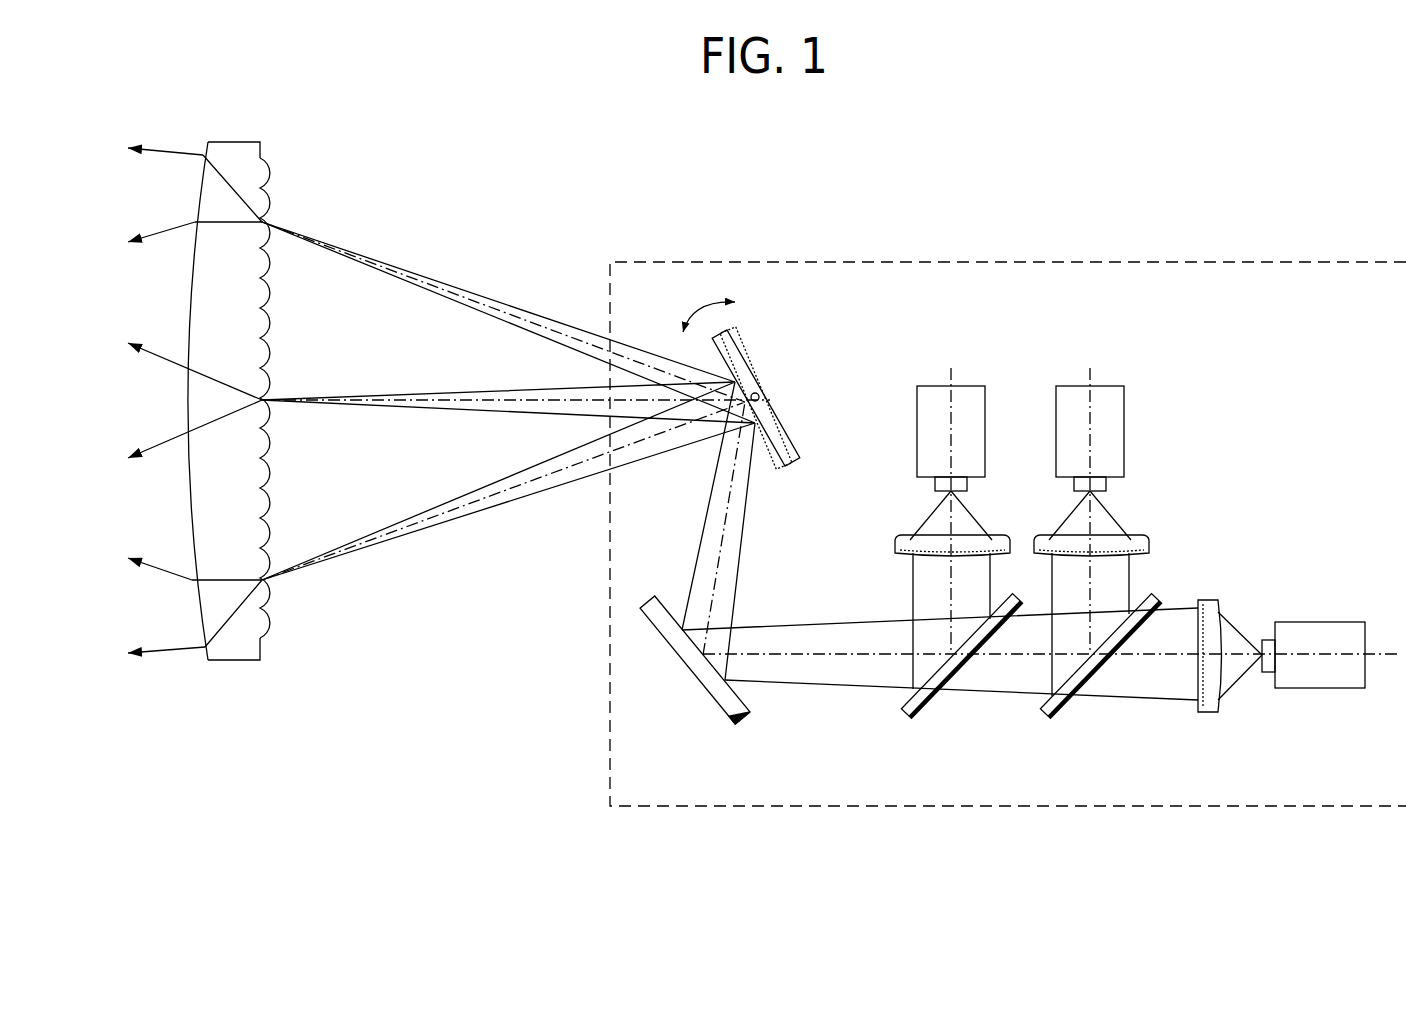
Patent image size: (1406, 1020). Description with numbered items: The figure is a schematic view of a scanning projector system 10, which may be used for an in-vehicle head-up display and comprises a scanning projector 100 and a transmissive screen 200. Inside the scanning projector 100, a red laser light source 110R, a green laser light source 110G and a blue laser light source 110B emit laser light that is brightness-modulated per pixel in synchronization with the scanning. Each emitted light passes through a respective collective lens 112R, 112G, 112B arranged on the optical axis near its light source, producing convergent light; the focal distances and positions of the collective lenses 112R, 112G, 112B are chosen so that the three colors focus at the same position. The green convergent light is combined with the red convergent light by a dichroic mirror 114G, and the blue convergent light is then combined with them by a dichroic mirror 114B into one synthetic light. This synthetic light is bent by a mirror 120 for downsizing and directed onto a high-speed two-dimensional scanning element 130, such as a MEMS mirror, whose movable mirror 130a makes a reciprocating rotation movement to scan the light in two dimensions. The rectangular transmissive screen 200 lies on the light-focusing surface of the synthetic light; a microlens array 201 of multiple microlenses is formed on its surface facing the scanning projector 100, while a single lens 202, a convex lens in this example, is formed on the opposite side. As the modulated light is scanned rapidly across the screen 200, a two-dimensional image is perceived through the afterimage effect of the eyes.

The scanning projector system 10 is at (521, 139).
The scanning projector 100 is at (713, 261).
The blue laser light source 110B is at (970, 385).
The green laser light source 110G is at (1107, 385).
The red laser light source 110R is at (1335, 621).
The collective lens 112B is at (895, 541).
The collective lens 112G is at (1149, 541).
The collective lens 112R is at (1207, 713).
The dichroic mirror 114B is at (923, 708).
The dichroic mirror 114G is at (1062, 710).
The mirror 120 is at (713, 698).
The high-speed two-dimensional scanning element 130 is at (742, 345).
The movable mirror 130a is at (764, 394).
The transmissive screen 200 is at (235, 141).
The microlens array 201 is at (275, 193).
The single lens 202 is at (182, 298).